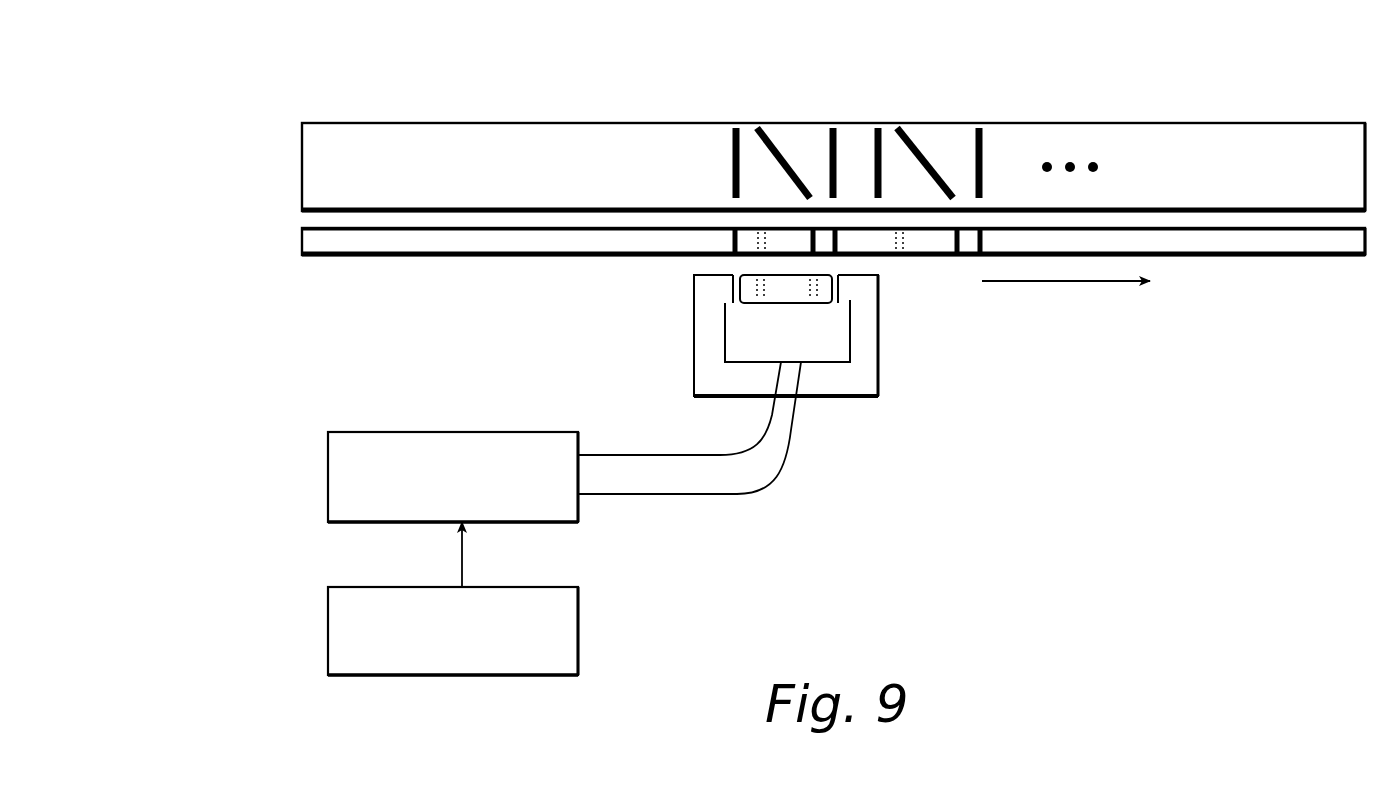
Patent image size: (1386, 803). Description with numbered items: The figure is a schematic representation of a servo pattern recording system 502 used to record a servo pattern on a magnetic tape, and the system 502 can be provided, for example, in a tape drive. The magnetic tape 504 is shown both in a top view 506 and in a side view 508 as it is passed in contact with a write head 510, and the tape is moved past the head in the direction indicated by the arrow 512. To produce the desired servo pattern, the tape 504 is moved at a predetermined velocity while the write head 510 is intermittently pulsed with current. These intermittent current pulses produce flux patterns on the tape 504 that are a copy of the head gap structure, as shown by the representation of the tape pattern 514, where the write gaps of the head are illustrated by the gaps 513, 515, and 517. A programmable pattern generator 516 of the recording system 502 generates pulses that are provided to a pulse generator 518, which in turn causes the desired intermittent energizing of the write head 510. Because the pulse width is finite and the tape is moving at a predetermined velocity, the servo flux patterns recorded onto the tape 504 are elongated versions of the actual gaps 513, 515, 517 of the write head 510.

The pattern recording system 502 is at (1122, 473).
The magnetic tape 504 is at (660, 120).
The top view 506 is at (273, 138).
The side view 508 is at (265, 243).
The write head 510 is at (878, 362).
The arrow 512 is at (1070, 288).
The gap 513 is at (840, 312).
The tape pattern 514 is at (892, 102).
The gap 515 is at (730, 312).
The programmable pattern generator 516 is at (328, 614).
The gap 517 is at (795, 303).
The pulse generator 518 is at (328, 462).